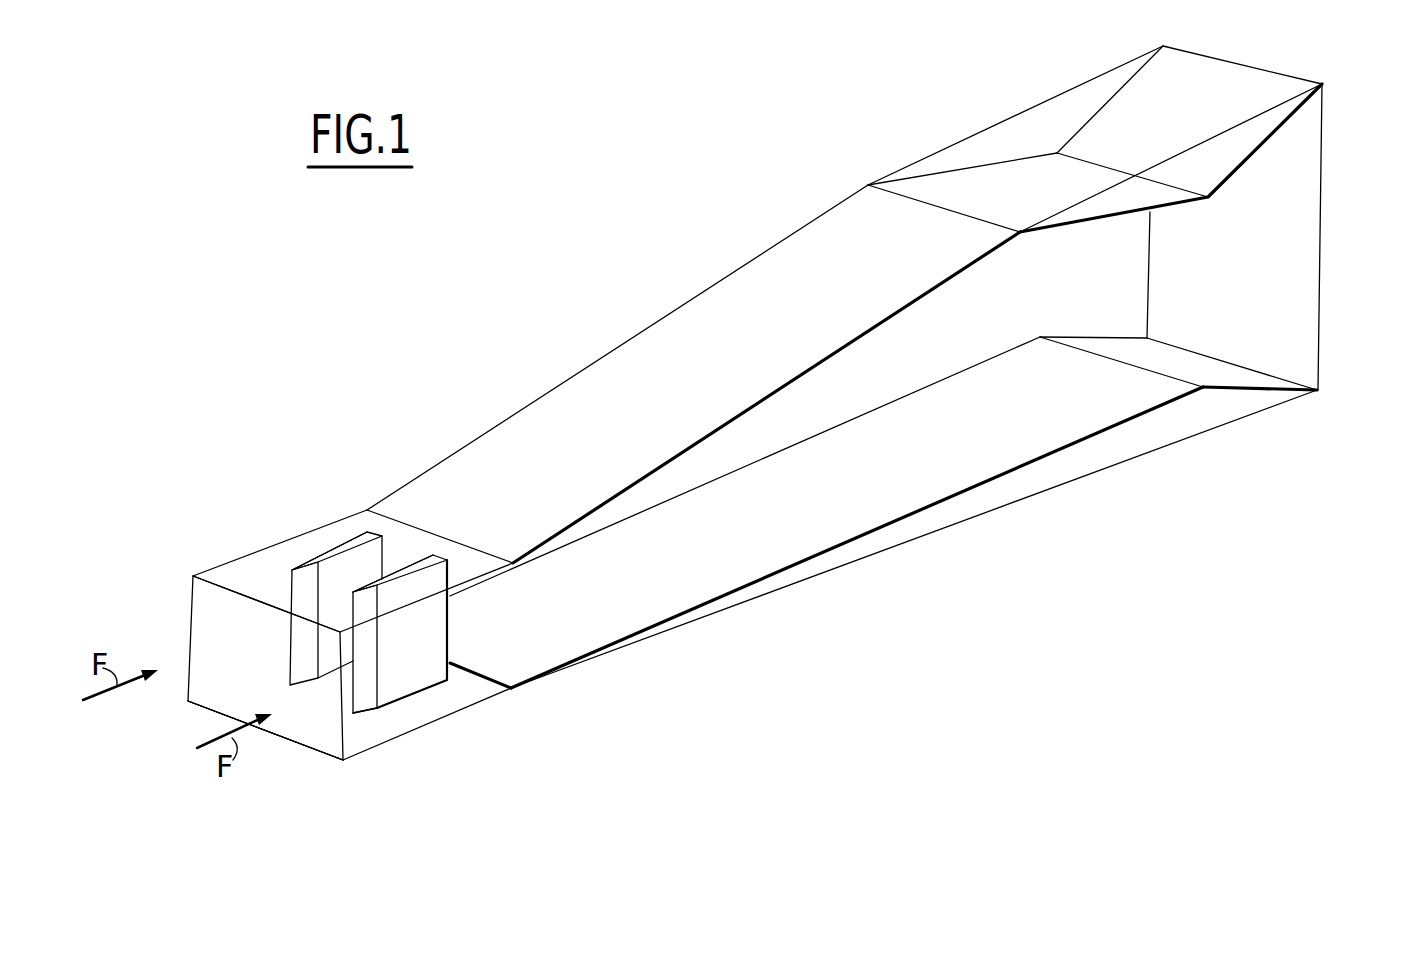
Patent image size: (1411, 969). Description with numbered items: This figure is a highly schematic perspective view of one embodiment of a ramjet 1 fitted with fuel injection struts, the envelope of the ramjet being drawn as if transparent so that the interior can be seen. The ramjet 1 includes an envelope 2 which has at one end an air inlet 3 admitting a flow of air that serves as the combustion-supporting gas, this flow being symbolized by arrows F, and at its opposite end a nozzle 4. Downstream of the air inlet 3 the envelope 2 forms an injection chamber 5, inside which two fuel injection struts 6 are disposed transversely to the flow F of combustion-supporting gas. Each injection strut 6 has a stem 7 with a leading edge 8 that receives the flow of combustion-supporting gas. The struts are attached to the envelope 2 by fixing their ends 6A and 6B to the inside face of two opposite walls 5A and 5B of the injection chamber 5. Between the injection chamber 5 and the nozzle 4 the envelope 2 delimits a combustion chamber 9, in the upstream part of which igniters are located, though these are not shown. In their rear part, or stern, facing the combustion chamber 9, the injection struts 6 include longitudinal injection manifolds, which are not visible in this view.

The ramjet 1 is at (700, 233).
The envelope 2 is at (853, 575).
The air inlet 3 is at (215, 619).
The nozzle 4 is at (1340, 209).
The injection chamber 5 is at (420, 710).
The wall of the injection chamber 5A is at (255, 572).
The wall of the injection chamber 5B is at (300, 747).
The fuel injection strut 6 is at (403, 667).
The end of the injection strut 6A is at (410, 570).
The end of the injection strut 6B is at (392, 708).
The stem 7 is at (368, 637).
The leading edge 8 is at (347, 702).
The combustion chamber 9 is at (892, 447).